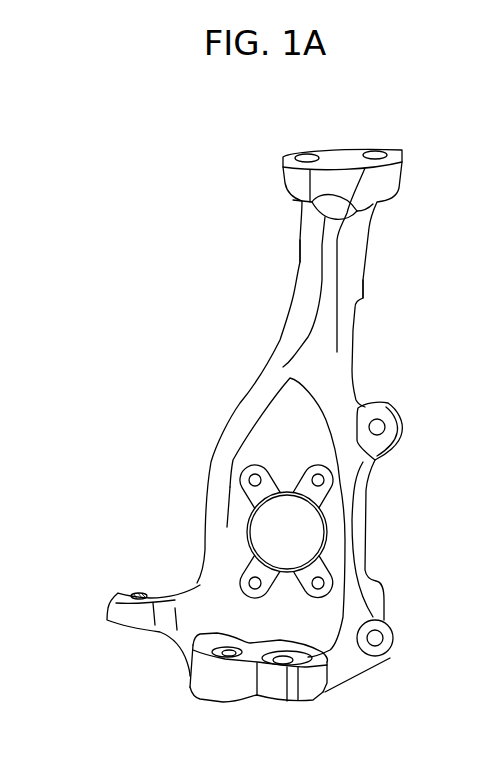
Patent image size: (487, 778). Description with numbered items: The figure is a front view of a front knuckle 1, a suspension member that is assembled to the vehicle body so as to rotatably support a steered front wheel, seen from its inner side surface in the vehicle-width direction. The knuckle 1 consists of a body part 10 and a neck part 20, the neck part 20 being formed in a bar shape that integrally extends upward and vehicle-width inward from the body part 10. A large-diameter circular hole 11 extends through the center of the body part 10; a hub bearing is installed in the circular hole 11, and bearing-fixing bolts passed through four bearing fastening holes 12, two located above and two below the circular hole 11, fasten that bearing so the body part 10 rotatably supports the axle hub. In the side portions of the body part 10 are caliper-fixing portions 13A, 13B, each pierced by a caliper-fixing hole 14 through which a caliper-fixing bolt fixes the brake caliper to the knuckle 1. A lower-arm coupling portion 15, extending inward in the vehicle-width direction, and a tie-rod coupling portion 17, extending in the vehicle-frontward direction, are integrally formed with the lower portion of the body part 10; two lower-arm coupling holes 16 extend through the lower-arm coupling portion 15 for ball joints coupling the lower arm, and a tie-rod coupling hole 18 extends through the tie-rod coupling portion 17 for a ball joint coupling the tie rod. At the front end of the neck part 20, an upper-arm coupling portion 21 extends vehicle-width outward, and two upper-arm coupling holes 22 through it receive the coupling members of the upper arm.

The front knuckle 1 is at (222, 190).
The body part 10 is at (368, 512).
The circular hole 11 is at (250, 531).
The bearing fastening holes 12 is at (252, 482).
The caliper-fixing portion 13A is at (392, 407).
The caliper-fixing portion 13B is at (398, 637).
The caliper-fixing hole 14 is at (378, 430).
The lower-arm coupling portion 15 is at (189, 672).
The lower-arm coupling holes 16 is at (222, 656).
The tie-rod coupling portion 17 is at (108, 607).
The tie-rod coupling hole 18 is at (138, 590).
The neck part 20 is at (363, 258).
The upper-arm coupling portion 21 is at (403, 176).
The upper-arm coupling holes 22 is at (306, 153).